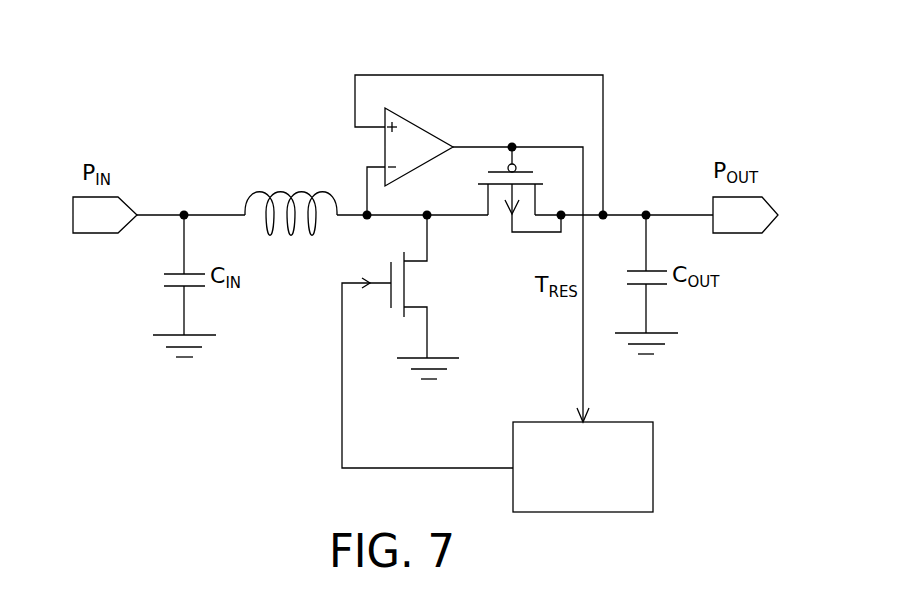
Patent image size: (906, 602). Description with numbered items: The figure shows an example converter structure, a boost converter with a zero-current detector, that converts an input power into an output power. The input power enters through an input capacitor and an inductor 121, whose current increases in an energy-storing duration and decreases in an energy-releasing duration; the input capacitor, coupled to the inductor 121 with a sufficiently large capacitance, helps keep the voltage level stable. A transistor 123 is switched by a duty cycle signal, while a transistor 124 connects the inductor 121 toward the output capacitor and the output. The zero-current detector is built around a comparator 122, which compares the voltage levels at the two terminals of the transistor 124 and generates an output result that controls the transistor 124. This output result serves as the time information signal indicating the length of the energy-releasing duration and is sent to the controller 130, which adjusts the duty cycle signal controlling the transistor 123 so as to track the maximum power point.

The inductor 121 is at (291, 235).
The comparator 122 is at (422, 127).
The transistor 123 is at (390, 299).
The transistor 124 is at (528, 172).
The controller 130 is at (654, 468).